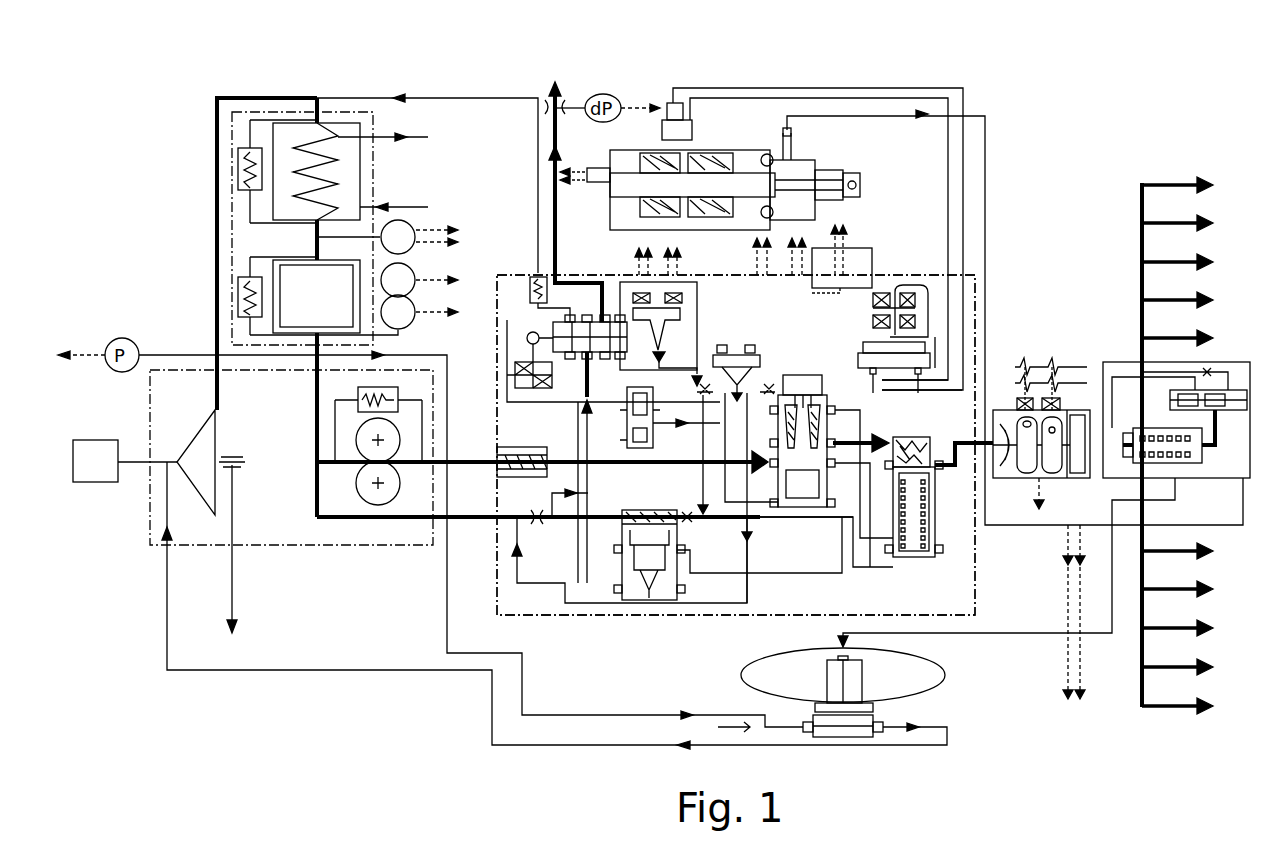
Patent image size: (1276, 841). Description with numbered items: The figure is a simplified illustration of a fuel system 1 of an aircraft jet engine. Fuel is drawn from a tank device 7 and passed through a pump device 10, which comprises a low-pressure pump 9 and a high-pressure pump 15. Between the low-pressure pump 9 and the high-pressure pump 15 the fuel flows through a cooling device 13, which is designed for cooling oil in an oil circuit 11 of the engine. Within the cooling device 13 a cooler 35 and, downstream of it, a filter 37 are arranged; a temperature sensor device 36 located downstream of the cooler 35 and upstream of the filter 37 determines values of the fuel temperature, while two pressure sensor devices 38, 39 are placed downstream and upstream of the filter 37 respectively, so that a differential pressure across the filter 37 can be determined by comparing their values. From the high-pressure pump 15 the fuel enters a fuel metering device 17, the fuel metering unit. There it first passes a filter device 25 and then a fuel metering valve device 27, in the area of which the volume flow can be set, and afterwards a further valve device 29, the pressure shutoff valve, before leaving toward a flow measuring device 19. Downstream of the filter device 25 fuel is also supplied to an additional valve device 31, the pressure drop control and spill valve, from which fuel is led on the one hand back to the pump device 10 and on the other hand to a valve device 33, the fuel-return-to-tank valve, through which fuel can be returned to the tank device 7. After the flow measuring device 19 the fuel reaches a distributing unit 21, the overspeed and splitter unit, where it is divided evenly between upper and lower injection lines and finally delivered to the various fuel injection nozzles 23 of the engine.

The fuel system 1 is at (196, 96).
The tank device 7 is at (87, 472).
The low-pressure pump 9 is at (190, 488).
The pump device 10 is at (311, 551).
The oil circuit 11 is at (415, 126).
The cooling device 13 is at (345, 106).
The high-pressure pump 15 is at (385, 505).
The fuel metering device 17 is at (487, 614).
The flow measuring device 19 is at (1003, 470).
The distributing unit 21 is at (1218, 362).
The fuel injection nozzles 23 is at (1176, 184).
The filter device 25 is at (500, 467).
The fuel metering valve device 27 is at (800, 490).
The further valve device 29 is at (915, 548).
The additional valve device 31 is at (620, 572).
The valve device 33 is at (570, 320).
The cooler 35 is at (262, 172).
The temperature sensor device 36 is at (413, 223).
The filter 37 is at (290, 273).
The pressure sensor device 38 is at (381, 312).
The pressure sensor device 39 is at (390, 270).